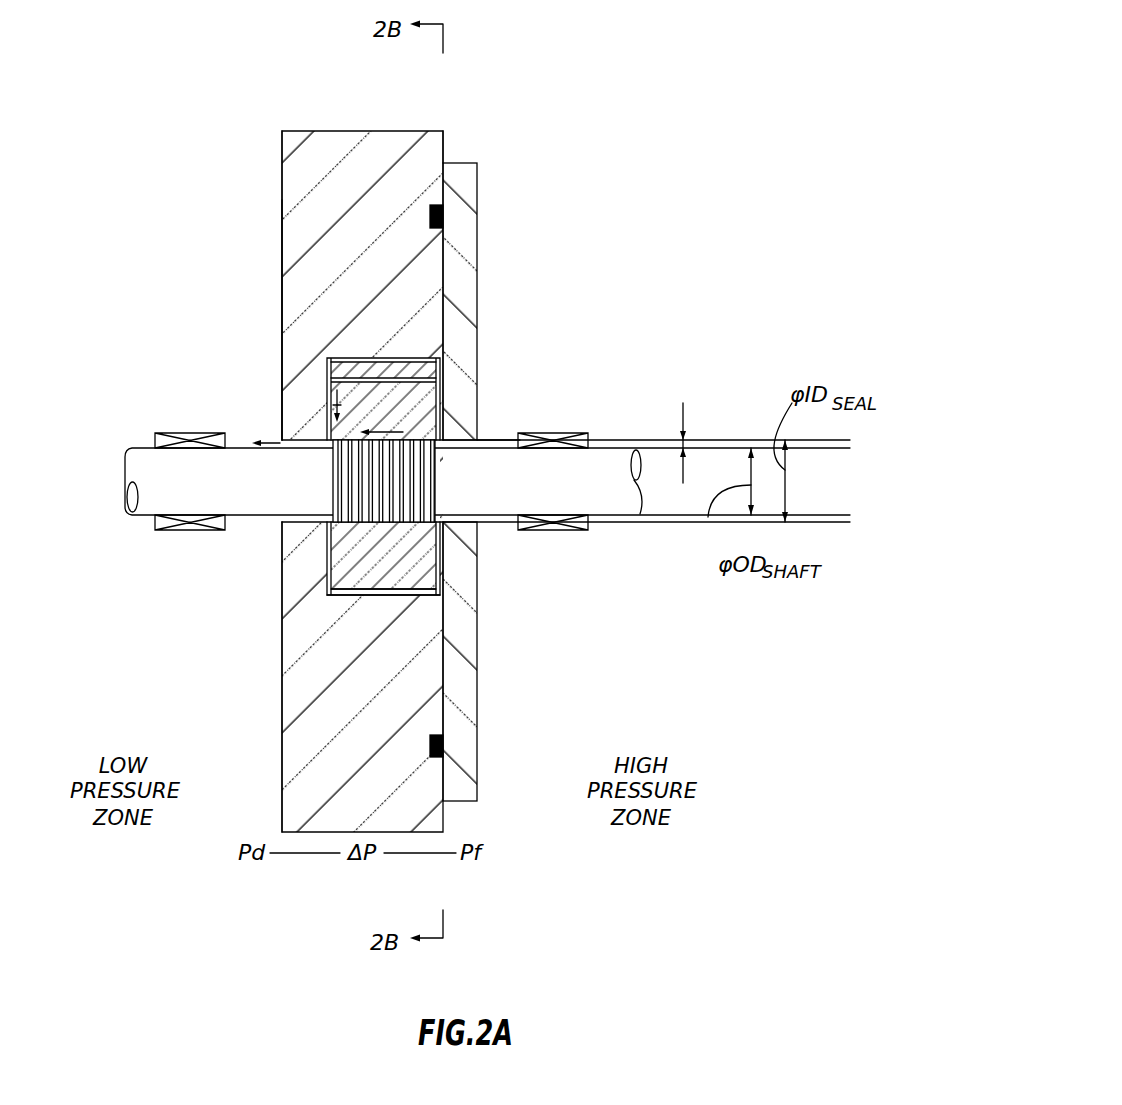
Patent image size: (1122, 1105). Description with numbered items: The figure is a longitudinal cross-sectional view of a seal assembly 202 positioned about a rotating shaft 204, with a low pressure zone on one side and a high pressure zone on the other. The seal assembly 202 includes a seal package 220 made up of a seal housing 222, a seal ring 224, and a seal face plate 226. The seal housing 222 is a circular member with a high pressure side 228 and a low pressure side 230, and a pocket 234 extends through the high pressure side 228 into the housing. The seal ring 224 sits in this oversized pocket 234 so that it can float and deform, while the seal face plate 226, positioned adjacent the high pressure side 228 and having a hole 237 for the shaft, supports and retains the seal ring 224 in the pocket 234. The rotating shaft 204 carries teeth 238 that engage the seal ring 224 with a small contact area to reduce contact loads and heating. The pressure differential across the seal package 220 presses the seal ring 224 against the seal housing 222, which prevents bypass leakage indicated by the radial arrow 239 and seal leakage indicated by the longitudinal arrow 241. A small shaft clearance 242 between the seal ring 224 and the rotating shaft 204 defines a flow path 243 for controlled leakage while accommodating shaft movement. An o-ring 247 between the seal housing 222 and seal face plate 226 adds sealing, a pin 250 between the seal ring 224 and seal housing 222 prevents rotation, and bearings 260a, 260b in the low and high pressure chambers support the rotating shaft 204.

The seal assembly 202 is at (278, 180).
The rotating shaft 204 is at (137, 448).
The seal package 220 is at (278, 716).
The seal housing 222 is at (362, 129).
The seal ring 224 is at (328, 378).
The seal face plate 226 is at (477, 195).
The high pressure side 228 is at (445, 135).
The low pressure side 230 is at (282, 262).
The pocket 234 is at (388, 588).
The hole 237 is at (497, 437).
The teeth 238 is at (447, 510).
The radial arrow 239 is at (332, 395).
The longitudinal arrow 241 is at (332, 408).
The shaft clearance 242 is at (683, 412).
The flow path 243 is at (275, 441).
The o-ring 247 is at (443, 215).
The pin 250 is at (415, 358).
The bearing 260a is at (193, 512).
The bearing 260b is at (575, 433).